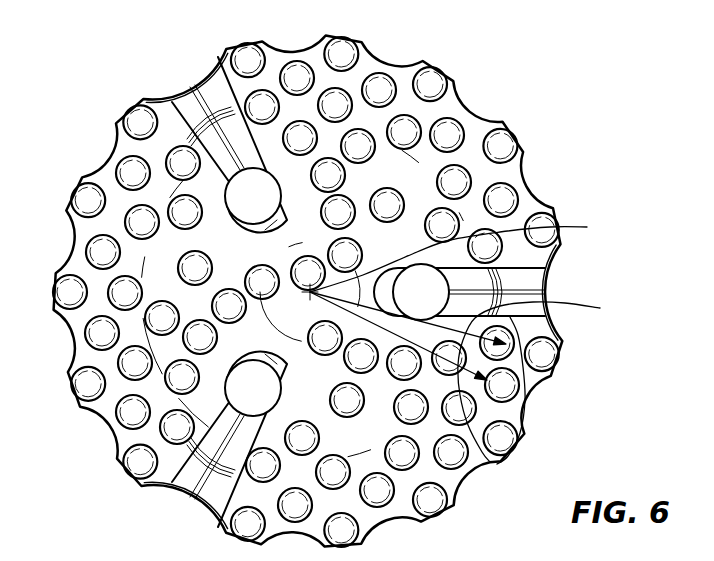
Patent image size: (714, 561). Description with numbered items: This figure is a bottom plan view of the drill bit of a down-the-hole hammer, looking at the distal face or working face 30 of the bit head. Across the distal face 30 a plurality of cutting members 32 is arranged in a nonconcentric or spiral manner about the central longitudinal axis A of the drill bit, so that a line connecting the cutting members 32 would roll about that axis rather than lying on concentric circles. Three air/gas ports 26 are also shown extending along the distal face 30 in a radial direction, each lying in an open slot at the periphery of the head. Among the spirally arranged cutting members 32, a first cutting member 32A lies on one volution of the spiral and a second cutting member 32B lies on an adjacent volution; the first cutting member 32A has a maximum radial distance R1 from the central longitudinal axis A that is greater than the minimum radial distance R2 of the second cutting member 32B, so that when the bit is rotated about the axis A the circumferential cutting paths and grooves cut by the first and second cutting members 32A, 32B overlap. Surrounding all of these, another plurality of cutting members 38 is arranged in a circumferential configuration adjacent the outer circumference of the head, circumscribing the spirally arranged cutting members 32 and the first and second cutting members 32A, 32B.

The air/gas port 26 is at (208, 93).
The distal face 30 is at (163, 260).
The cutting members 32 is at (379, 83).
The first cutting member 32A is at (548, 326).
The second cutting member 32B is at (507, 387).
The cutting members 38 is at (137, 120).
The central longitudinal axis A is at (459, 254).
The maximum radial distance R1 is at (544, 379).
The minimum radial distance R2 is at (490, 440).